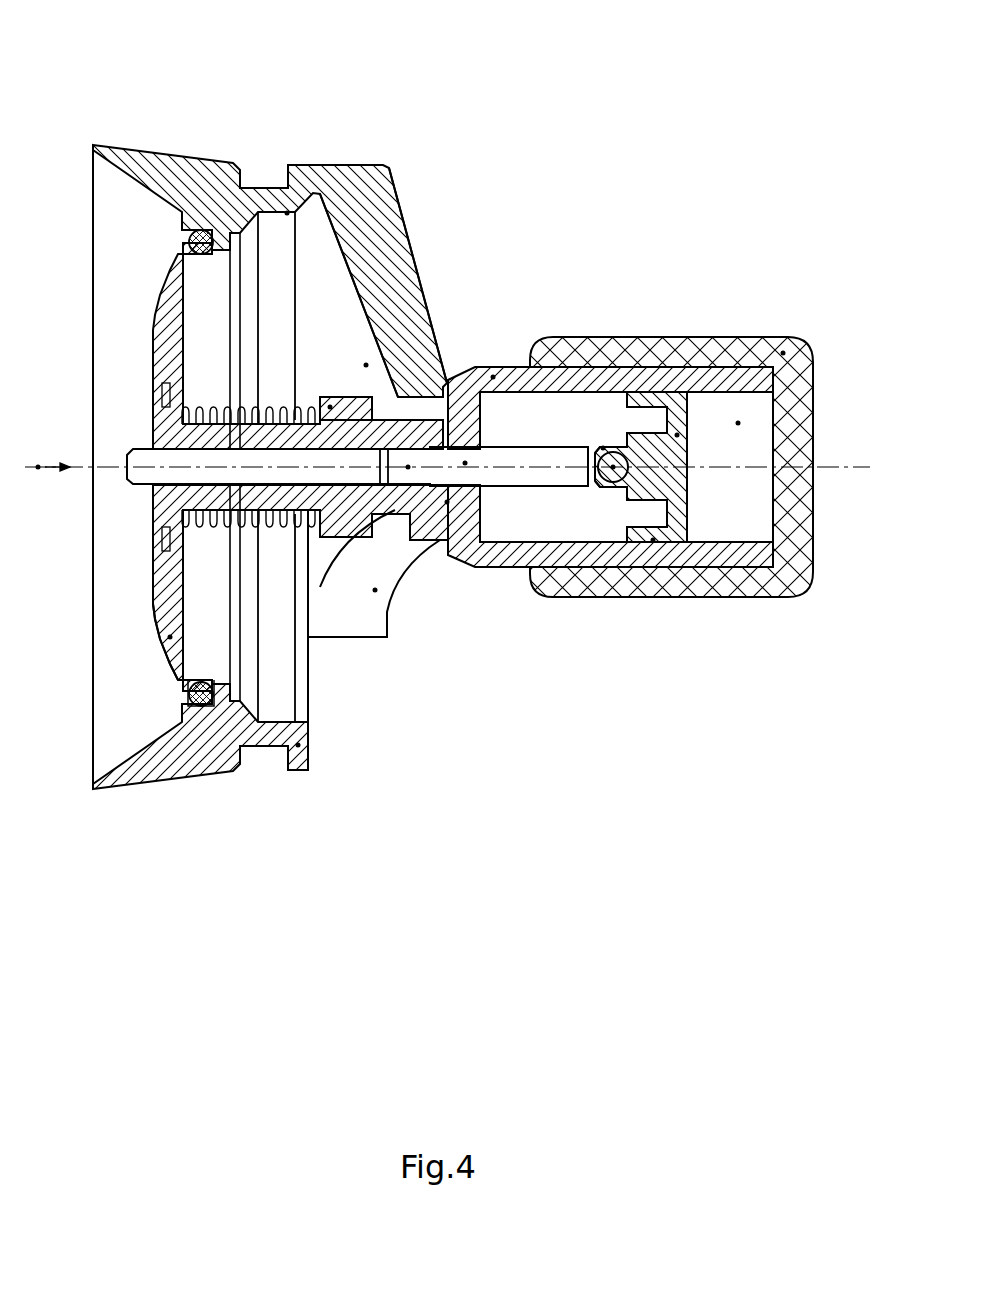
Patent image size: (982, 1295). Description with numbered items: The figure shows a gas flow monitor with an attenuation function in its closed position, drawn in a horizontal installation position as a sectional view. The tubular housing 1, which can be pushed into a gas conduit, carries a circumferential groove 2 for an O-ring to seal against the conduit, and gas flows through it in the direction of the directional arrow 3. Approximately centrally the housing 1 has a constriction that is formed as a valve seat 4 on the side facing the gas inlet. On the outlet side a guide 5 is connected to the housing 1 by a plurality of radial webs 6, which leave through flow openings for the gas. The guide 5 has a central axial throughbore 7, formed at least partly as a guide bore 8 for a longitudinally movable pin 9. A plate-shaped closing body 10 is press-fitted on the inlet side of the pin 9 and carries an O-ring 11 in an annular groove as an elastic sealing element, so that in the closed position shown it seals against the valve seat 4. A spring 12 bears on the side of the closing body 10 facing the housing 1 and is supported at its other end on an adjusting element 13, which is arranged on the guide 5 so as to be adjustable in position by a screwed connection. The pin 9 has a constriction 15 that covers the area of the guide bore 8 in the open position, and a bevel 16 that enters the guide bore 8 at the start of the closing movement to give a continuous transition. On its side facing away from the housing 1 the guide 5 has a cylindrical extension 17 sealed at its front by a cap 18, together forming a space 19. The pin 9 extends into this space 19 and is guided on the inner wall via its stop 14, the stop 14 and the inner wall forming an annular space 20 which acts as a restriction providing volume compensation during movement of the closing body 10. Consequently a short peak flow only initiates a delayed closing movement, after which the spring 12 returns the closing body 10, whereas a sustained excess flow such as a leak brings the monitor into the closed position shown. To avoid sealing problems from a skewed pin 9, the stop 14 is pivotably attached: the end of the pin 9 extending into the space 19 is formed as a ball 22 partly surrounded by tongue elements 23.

The tubular housing 1 is at (298, 745).
The circumferential groove 2 is at (263, 757).
The directional arrow 3 is at (38, 467).
The valve seat 4 is at (200, 706).
The guide 5 is at (447, 502).
The radial webs 6 is at (375, 590).
The throughbore 7 is at (287, 213).
The guide bore 8 is at (192, 236).
The pin 9 is at (465, 463).
The closing body 10 is at (170, 637).
The O-ring 11 is at (207, 702).
The spring 12 is at (275, 501).
The adjusting element 13 is at (330, 407).
The stop 14 is at (677, 435).
The constriction 15 is at (408, 467).
The bevel 16 is at (366, 365).
The cylindrical extension 17 is at (493, 377).
The cap 18 is at (783, 353).
The space 19 is at (738, 423).
The annular space 20 is at (653, 540).
The ball 22 is at (613, 467).
The tongue elements 23 is at (603, 448).